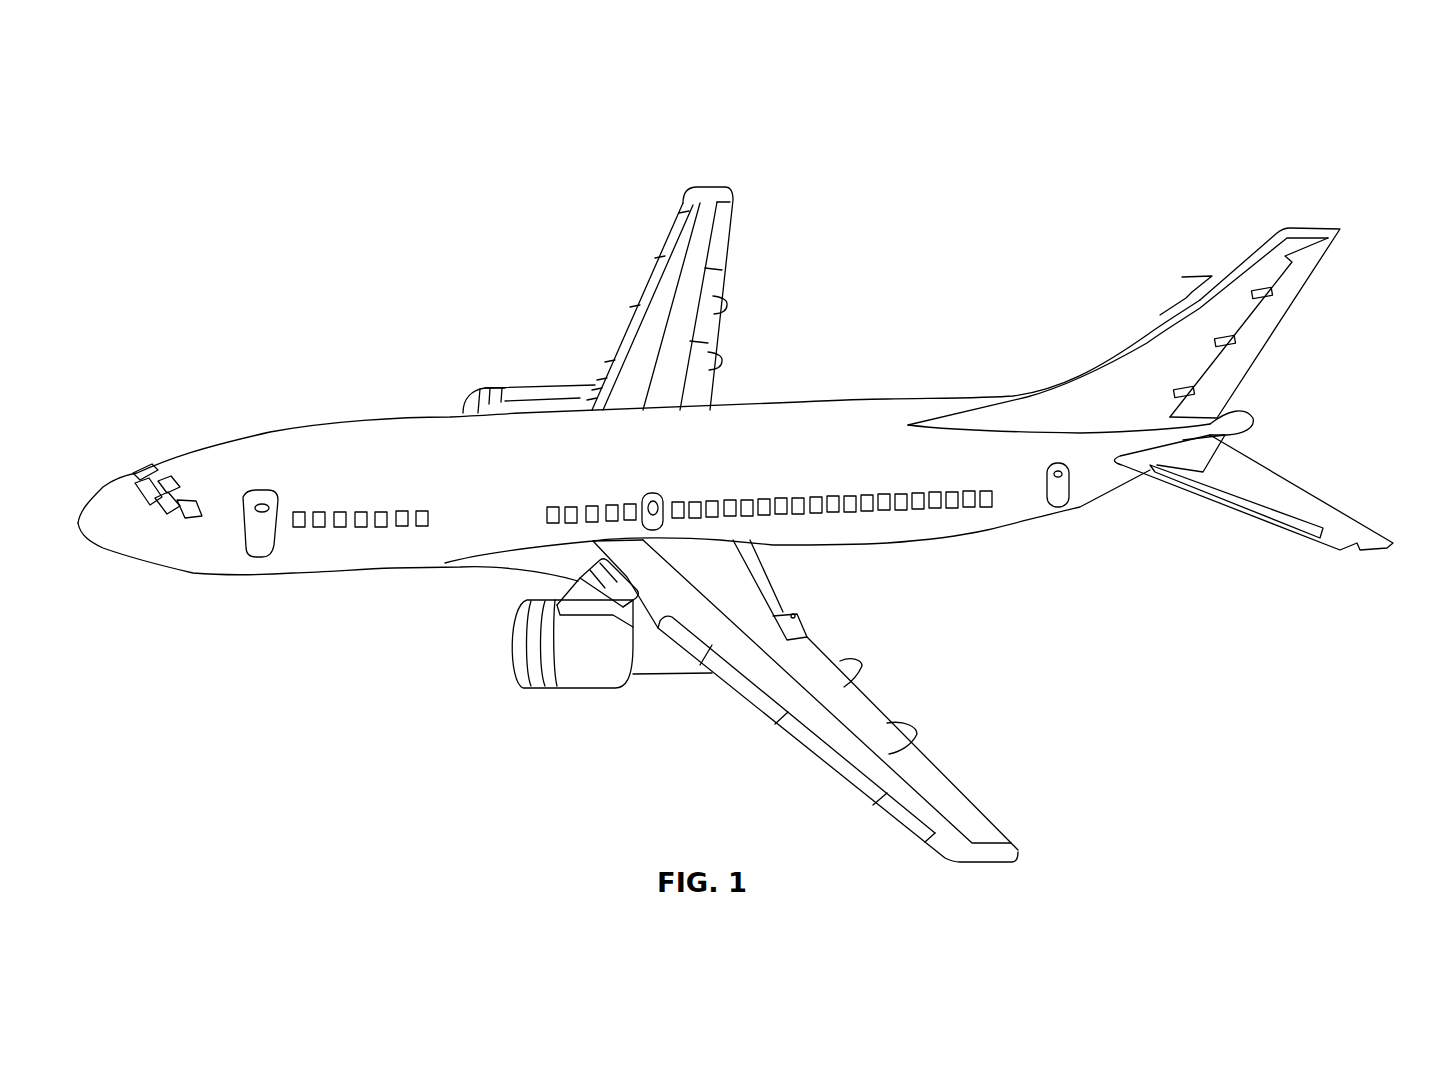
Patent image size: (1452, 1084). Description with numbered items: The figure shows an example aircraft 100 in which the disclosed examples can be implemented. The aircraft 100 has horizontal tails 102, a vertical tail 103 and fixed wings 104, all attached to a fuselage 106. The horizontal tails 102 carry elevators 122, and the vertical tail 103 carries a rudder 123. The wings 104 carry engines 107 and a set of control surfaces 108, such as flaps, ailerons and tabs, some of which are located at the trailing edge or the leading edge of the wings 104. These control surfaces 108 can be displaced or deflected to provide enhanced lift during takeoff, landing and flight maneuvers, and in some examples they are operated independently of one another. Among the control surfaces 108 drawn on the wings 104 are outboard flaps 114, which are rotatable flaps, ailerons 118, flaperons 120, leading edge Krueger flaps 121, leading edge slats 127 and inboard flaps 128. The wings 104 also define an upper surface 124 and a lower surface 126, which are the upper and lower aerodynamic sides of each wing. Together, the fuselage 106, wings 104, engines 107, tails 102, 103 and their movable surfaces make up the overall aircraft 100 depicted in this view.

The aircraft 100 is at (1215, 81).
The horizontal tails 102 is at (1110, 314).
The vertical tail 103 is at (1322, 204).
The wings 104 is at (718, 150).
The fuselage 106 is at (272, 438).
The engines 107 is at (466, 395).
The control surfaces 108 is at (778, 324).
The outboard flaps 114 is at (710, 312).
The ailerons 118 is at (722, 236).
The flaperons 120 is at (690, 340).
The leading edge Krueger flaps 121 is at (593, 375).
The elevators 122 is at (1190, 277).
The rudder 123 is at (1310, 255).
The upper surface 124 is at (673, 275).
The lower surface 126 is at (603, 348).
The leading edge slats 127 is at (650, 270).
The inboard flaps 128 is at (691, 400).